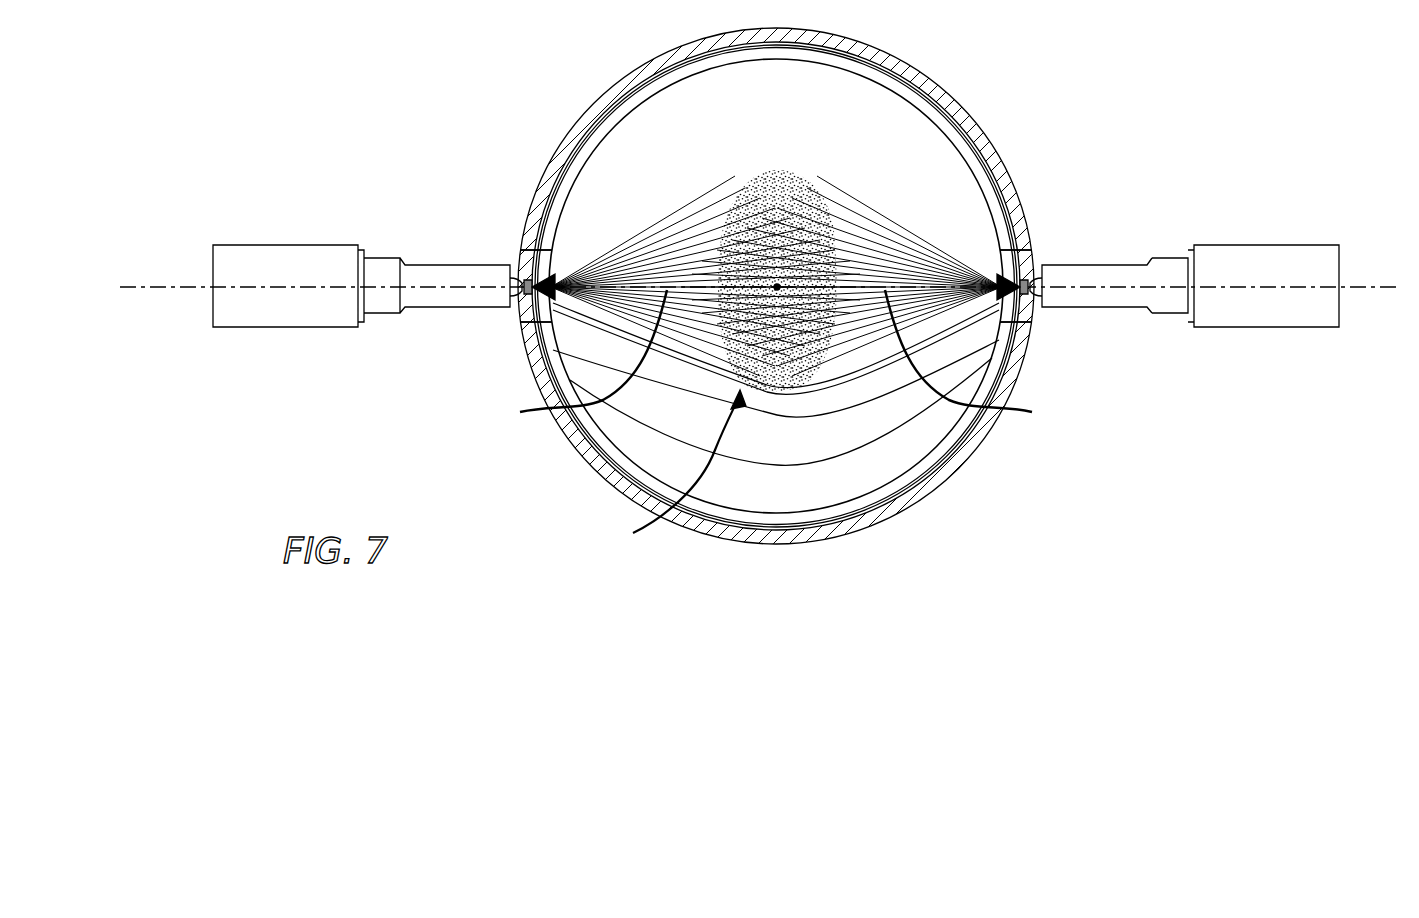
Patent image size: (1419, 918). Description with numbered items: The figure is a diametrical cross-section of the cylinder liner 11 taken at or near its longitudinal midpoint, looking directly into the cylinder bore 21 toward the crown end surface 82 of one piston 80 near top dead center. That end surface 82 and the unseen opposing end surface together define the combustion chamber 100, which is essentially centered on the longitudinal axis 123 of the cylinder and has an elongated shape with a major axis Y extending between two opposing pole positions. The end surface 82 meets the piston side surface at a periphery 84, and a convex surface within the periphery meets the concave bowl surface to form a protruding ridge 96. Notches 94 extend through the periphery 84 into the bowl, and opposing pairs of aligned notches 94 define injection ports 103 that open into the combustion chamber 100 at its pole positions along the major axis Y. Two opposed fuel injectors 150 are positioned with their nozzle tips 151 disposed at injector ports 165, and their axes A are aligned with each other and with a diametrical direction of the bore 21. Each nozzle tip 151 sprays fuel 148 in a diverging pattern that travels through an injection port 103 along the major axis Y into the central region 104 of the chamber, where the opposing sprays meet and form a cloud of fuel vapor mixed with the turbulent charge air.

The combustion chamber 100 is at (918, 166).
The cylinder liner 11 is at (705, 548).
The periphery 84 is at (757, 528).
The cylinder bore 21 is at (945, 465).
The piston 80 is at (890, 487).
The end surface 82 is at (640, 430).
The ridge 96 is at (805, 443).
The central region 104 is at (671, 466).
The longitudinal axis 123 is at (777, 283).
The fuel 148 is at (790, 195).
The fuel injector 150 is at (330, 245).
The injector port 165 is at (525, 275).
The nozzle tip 151 is at (523, 300).
The notch 94 is at (552, 267).
The injection port 103 is at (776, 286).
The major axis Y is at (766, 361).
The injector axis A is at (127, 290).